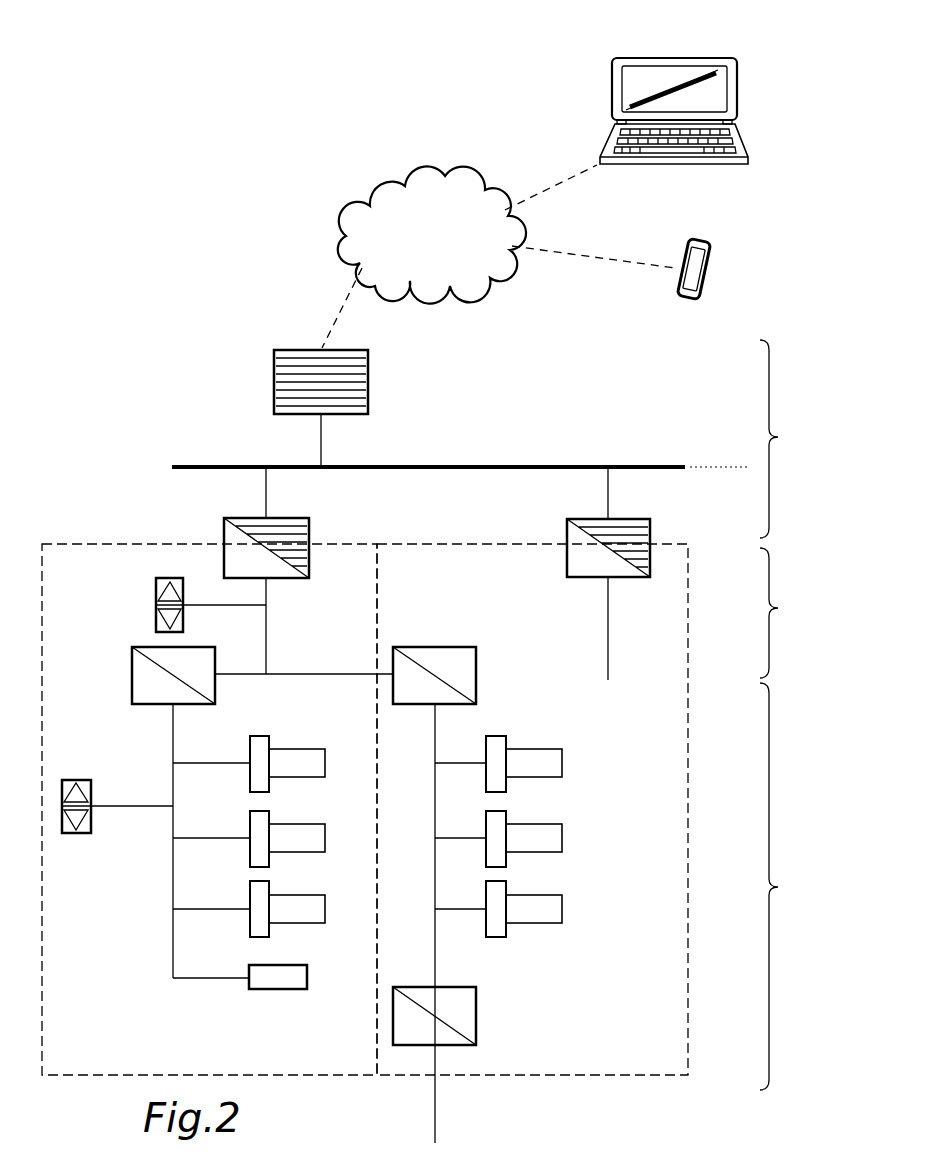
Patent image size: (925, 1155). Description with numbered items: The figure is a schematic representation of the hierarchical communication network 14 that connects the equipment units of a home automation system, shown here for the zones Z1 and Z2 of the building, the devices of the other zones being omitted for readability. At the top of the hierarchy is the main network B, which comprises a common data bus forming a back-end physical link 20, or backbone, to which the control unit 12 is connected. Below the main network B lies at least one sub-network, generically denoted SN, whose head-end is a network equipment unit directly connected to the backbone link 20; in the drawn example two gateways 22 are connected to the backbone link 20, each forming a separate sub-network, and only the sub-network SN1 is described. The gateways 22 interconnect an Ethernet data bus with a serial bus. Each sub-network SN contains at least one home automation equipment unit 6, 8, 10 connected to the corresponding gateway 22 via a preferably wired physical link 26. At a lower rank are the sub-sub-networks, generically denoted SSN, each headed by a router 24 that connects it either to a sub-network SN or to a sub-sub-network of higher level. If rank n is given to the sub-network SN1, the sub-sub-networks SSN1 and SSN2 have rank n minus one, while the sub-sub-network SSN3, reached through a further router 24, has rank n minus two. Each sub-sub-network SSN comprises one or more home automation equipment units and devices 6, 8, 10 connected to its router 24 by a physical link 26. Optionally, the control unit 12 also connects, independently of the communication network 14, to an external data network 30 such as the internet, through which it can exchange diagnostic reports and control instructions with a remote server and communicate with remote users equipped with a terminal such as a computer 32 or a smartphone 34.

The home automation equipment unit 6 is at (562, 909).
The home automation equipment unit 8 is at (161, 578).
The home automation equipment unit 10 is at (298, 976).
The control unit 12 is at (292, 374).
The communication network 14 is at (236, 196).
The back-end physical link 20 is at (488, 465).
The gateway 22 is at (232, 566).
The router 24 is at (132, 684).
The physical link 26 is at (173, 878).
The external data network 30 is at (498, 256).
The computer 32 is at (744, 90).
The mobile phone 34 is at (724, 268).
The zone 1 Z1 is at (65, 544).
The zone 2 Z2 is at (672, 544).
The sub-network SN1 is at (334, 543).
The sub-sub-network SSN1 is at (156, 919).
The sub-sub-network SSN2 is at (506, 702).
The sub-sub-network SSN3 is at (496, 1036).
The main network B is at (778, 439).
The sub-network SN is at (784, 613).
The sub-sub-network SSN is at (790, 886).